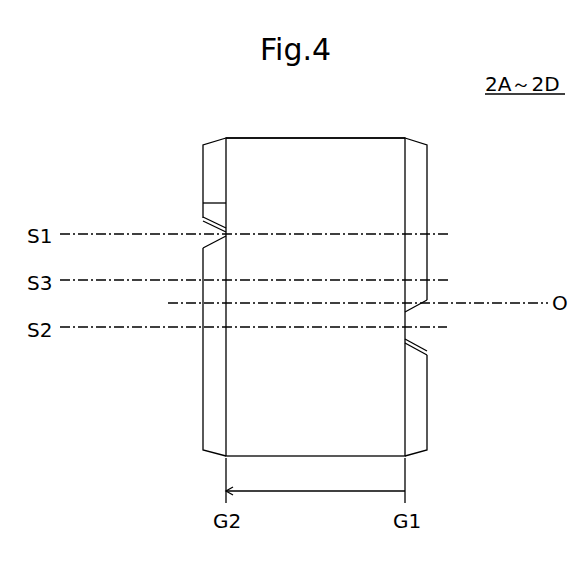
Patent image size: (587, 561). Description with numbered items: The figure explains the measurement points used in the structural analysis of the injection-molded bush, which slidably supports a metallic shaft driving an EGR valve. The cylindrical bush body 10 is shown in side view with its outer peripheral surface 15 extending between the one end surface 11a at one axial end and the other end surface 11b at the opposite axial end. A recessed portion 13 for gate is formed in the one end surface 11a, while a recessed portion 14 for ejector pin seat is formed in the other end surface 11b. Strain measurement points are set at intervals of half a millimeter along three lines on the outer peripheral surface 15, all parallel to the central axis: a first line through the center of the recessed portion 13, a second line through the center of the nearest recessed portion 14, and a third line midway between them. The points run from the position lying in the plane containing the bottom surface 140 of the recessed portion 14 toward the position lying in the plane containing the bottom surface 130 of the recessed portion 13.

The bush body 10 is at (378, 138).
The outer peripheral surface 15 is at (304, 138).
The one end surface 11a is at (203, 408).
The other end surface 11b is at (427, 208).
The recessed portion for gate 13 is at (200, 226).
The bottom surface of recessed portion for gate 130 is at (226, 237).
The recessed portion for ejector pin seat 14 is at (436, 338).
The bottom surface of recessed portion for ejector pin seat 140 is at (405, 318).